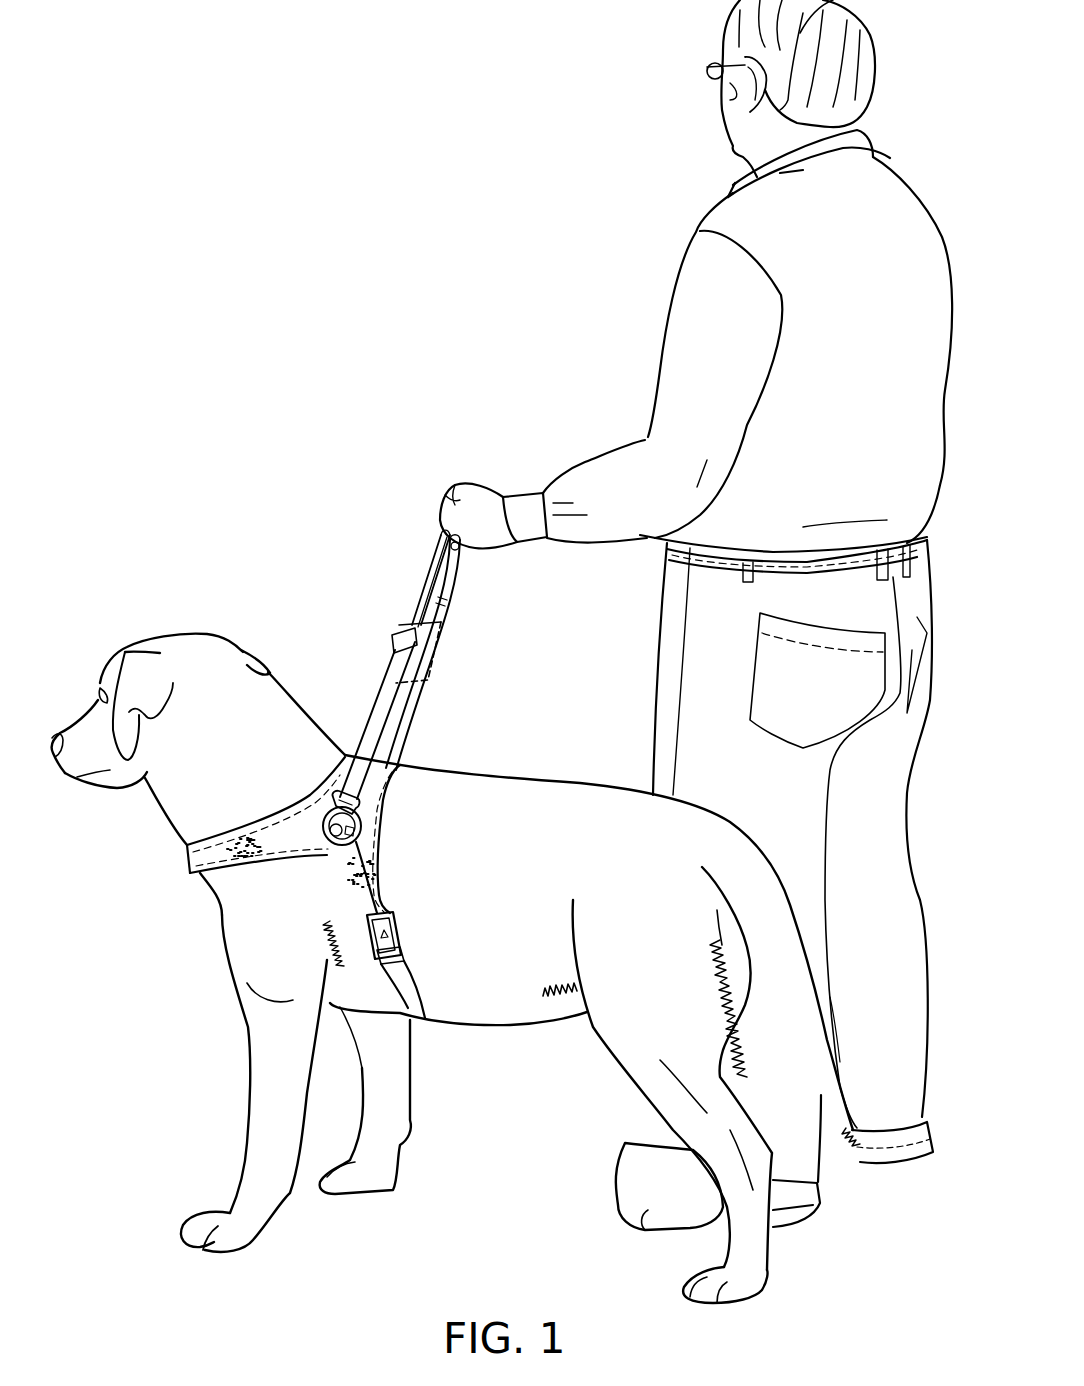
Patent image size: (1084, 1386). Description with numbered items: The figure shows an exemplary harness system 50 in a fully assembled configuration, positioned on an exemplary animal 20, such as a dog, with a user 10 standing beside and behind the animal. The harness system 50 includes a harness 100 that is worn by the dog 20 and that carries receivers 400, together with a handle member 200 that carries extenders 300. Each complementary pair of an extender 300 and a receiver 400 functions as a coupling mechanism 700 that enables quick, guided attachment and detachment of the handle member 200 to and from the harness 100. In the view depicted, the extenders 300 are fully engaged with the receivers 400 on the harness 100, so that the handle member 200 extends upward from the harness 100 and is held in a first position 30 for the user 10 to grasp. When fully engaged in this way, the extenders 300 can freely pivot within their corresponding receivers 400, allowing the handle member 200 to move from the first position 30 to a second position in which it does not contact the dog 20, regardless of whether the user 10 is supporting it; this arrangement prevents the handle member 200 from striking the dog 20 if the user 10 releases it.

The user 10 is at (903, 176).
The animal 20 is at (186, 634).
The first position 30 is at (454, 708).
The harness system 50 is at (319, 542).
The harness 100 is at (192, 864).
The handle member 200 is at (413, 586).
The extender 300 is at (364, 812).
The receiver 400 is at (322, 830).
The coupling mechanism 700 is at (358, 847).